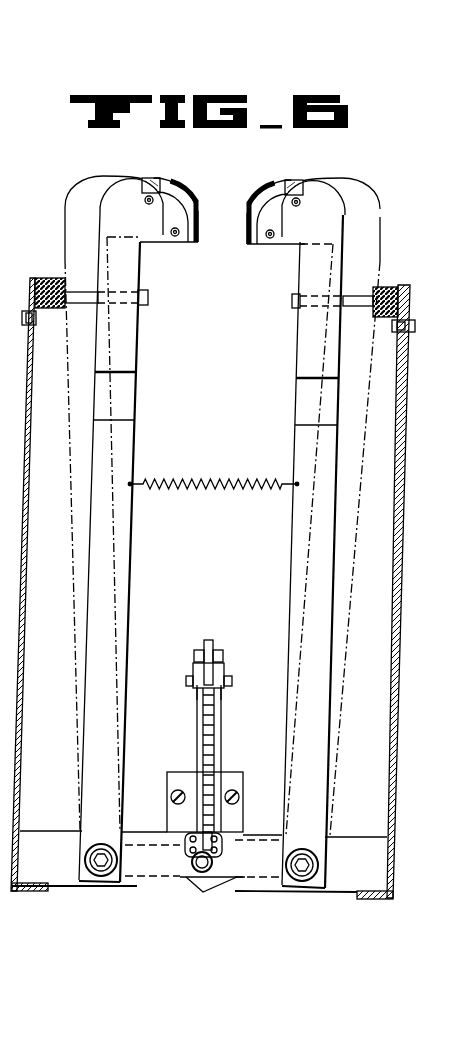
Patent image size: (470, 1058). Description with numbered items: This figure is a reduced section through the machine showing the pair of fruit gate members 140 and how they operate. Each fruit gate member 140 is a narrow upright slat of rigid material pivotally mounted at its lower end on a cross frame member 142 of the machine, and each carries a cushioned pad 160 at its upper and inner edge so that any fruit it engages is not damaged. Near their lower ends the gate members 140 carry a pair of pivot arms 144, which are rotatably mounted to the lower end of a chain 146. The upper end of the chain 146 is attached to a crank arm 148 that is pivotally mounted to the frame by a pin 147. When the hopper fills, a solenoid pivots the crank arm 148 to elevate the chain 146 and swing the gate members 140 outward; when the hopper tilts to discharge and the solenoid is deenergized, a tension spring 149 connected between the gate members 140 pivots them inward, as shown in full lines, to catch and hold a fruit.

The fruit gate member 140 is at (128, 190).
The cushioned pad 160 is at (268, 188).
The cross frame member 142 is at (372, 868).
The tension spring 149 is at (226, 463).
The crank arm 148 is at (208, 640).
The pin 147 is at (232, 681).
The chain 146 is at (212, 728).
The pivot arm 144 is at (258, 877).